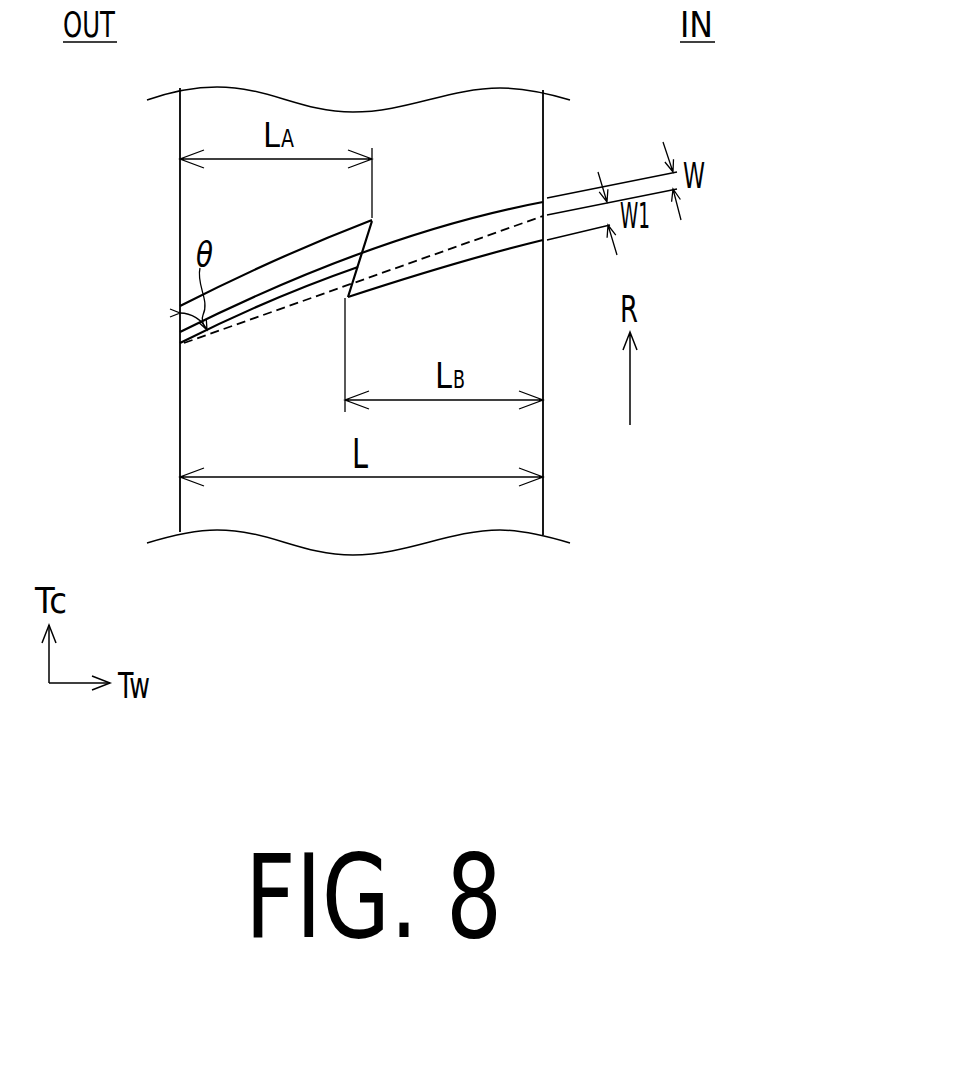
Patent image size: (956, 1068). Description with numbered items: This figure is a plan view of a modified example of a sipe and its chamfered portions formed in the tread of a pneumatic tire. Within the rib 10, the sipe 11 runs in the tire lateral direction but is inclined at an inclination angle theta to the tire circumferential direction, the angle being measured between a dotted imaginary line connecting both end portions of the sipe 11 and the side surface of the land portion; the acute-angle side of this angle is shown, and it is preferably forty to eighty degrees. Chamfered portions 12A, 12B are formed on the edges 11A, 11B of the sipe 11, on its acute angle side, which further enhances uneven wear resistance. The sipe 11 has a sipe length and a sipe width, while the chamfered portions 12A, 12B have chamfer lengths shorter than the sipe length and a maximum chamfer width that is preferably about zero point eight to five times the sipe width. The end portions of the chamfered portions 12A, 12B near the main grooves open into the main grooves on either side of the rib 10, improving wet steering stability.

The rib 10 is at (553, 573).
The sipe 11 is at (447, 232).
The edge of the sipe 11A is at (285, 281).
The edge of the sipe 11B is at (402, 245).
The chamfered portion 12A is at (254, 308).
The chamfered portion 12B is at (503, 243).